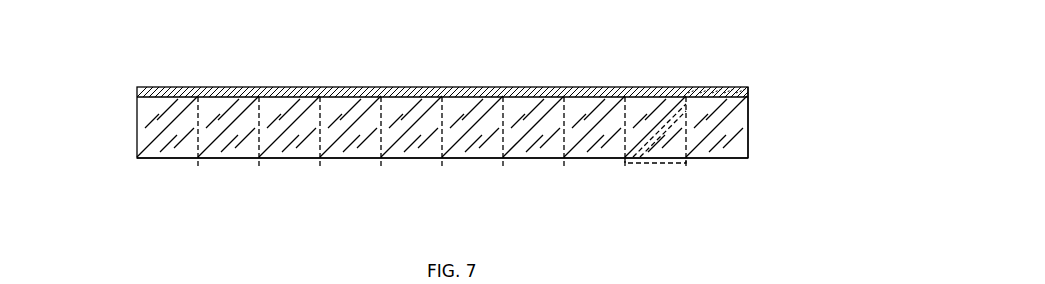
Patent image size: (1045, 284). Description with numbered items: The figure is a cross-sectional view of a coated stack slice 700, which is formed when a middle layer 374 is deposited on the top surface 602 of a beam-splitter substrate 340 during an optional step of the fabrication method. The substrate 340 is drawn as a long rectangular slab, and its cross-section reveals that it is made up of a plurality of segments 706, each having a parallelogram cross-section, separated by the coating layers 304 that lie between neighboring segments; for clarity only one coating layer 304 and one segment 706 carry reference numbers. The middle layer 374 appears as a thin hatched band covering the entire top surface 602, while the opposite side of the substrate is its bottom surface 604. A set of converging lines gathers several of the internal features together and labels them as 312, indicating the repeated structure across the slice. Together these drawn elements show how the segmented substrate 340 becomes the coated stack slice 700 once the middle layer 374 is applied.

The coated stack slice 700 is at (145, 59).
The top surface 602 is at (147, 99).
The middle layer 374 is at (748, 92).
The coating layer 304 is at (157, 136).
The tile elements 312 is at (228, 190).
The bottom layer 604 is at (533, 160).
The segment 706 is at (655, 163).
The beam-splitter substrate 340 is at (780, 131).